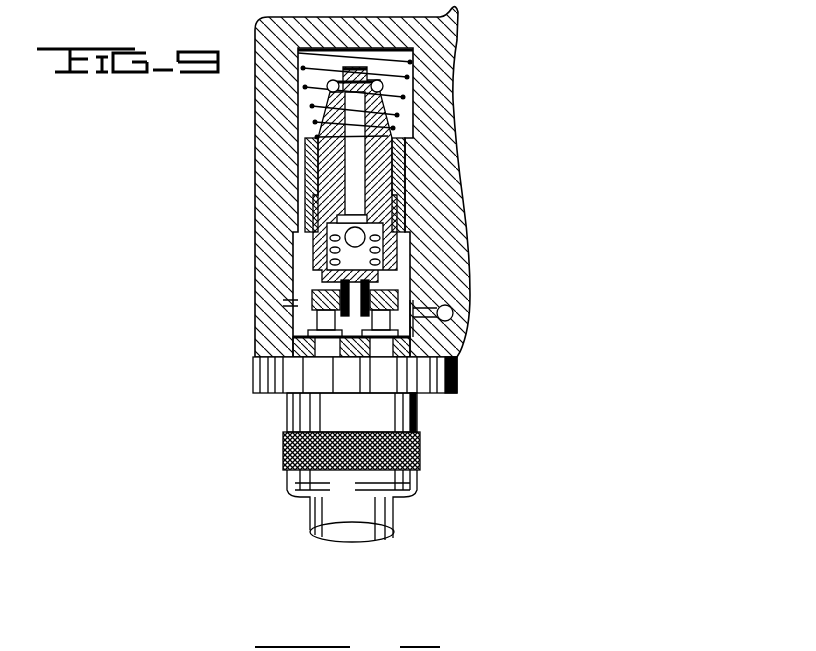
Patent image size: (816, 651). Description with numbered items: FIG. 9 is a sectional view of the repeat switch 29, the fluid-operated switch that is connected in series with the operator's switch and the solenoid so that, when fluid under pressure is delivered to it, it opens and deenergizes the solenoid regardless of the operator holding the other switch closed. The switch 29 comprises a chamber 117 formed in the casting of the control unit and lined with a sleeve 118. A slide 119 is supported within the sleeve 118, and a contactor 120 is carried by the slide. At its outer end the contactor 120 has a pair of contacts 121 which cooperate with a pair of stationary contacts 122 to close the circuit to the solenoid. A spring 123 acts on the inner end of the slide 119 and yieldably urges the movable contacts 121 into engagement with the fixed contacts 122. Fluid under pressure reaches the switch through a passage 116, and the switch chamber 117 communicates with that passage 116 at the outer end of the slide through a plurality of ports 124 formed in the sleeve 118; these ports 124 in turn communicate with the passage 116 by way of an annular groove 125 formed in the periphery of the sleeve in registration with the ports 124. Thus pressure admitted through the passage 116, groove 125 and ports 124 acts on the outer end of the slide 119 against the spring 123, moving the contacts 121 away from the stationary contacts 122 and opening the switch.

The repeat switch 29 is at (492, 361).
The passage 116 is at (453, 310).
The chamber 117 is at (368, 86).
The sleeve 118 is at (412, 242).
The slide 119 is at (390, 163).
The contactor 120 is at (387, 283).
The contacts 121 is at (380, 320).
The stationary contacts 122 is at (328, 348).
The spring 123 is at (410, 70).
The ports 124 is at (298, 327).
The annular groove 125 is at (288, 332).